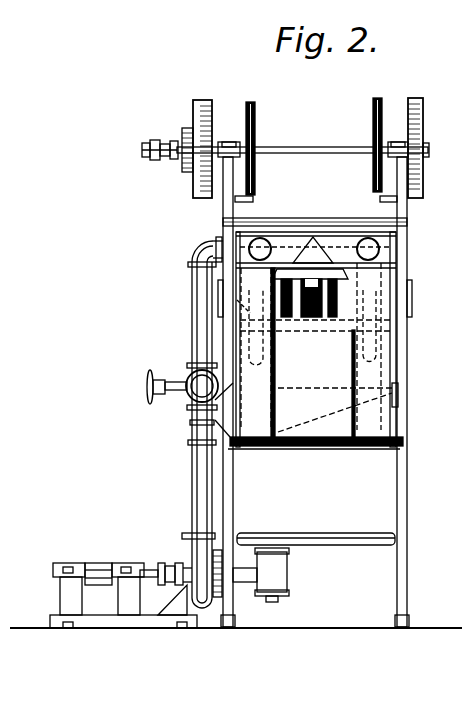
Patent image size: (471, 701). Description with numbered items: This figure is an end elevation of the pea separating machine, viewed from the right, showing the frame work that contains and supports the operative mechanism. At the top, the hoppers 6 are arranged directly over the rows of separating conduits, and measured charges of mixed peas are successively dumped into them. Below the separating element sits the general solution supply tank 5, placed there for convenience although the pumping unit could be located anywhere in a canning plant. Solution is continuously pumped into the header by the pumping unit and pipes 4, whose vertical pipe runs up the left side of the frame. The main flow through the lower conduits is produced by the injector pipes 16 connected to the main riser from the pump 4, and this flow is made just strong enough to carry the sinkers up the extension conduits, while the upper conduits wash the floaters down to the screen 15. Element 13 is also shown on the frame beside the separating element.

The pumping unit and pipes 4 is at (190, 550).
The general solution supply tank 5 is at (314, 542).
The hoppers 6 is at (338, 247).
The right cylinder 13 is at (383, 369).
The screen 15 is at (247, 339).
The injector pipes 16 is at (335, 394).